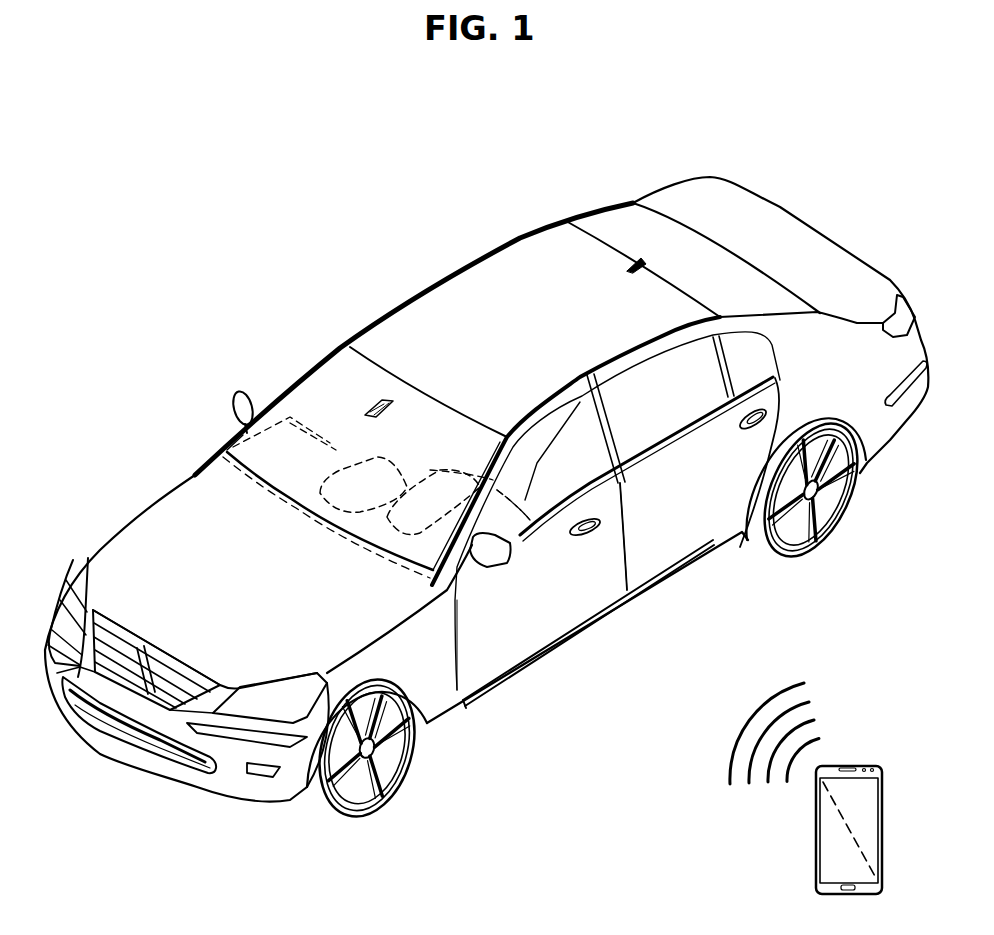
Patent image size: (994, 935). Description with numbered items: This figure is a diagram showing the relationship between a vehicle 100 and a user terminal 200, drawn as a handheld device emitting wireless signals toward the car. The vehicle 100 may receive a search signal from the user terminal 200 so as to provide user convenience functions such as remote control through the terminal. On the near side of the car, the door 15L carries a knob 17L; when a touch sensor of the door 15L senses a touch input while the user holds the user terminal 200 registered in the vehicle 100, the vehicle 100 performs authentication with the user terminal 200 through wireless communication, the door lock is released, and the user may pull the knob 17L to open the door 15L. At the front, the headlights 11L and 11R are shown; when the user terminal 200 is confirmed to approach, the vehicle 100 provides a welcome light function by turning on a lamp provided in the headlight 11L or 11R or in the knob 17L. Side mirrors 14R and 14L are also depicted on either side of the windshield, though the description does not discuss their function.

The vehicle 100 is at (521, 236).
The headlight 11R is at (67, 573).
The headlight 11L is at (287, 700).
The right side mirror 14R is at (232, 402).
The left side mirror 14L is at (507, 565).
The door 15L is at (568, 592).
The knob 17L is at (592, 522).
The user terminal 200 is at (868, 764).